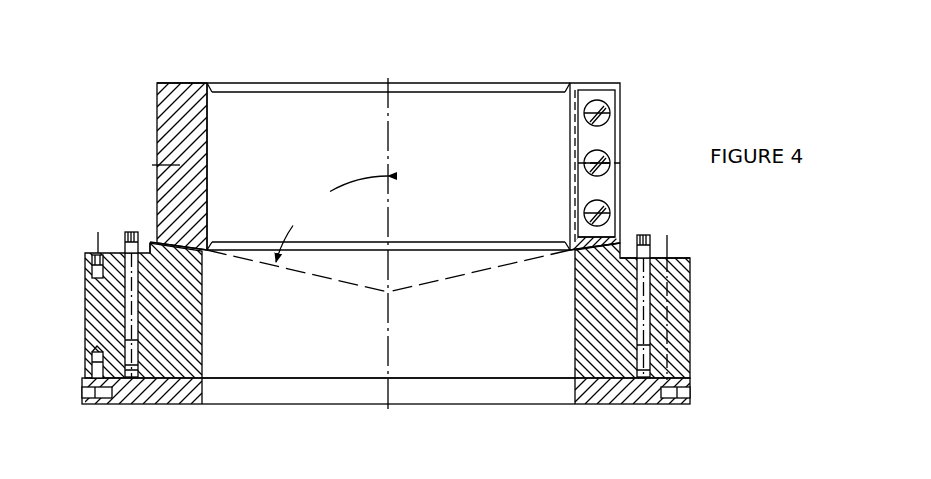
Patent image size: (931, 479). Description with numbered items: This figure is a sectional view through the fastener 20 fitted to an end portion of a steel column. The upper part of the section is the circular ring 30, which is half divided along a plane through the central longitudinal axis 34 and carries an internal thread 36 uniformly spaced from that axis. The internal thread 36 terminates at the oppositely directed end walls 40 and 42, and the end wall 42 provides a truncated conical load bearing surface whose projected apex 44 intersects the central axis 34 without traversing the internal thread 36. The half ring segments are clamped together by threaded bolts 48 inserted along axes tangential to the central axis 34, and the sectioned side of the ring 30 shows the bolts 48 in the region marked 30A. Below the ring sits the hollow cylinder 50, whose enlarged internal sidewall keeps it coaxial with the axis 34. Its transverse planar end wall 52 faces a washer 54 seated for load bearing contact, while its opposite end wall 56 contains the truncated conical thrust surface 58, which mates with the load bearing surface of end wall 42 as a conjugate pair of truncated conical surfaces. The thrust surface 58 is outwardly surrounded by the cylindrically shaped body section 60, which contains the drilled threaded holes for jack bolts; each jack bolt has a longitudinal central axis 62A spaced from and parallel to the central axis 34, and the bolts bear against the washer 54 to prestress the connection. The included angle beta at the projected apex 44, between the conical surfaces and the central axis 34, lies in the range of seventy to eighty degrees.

The fastener 20 is at (628, 80).
The circular ring 30 is at (156, 95).
The housing side plate with holes 30A is at (608, 210).
The central longitudinal axis 34 is at (390, 110).
The internal thread 36 is at (207, 115).
The end wall 40 is at (177, 83).
The end wall 42 is at (161, 250).
The projected apex 44 is at (389, 296).
The threaded bolts 48 is at (584, 160).
The hollow cylinder 50 is at (700, 330).
The transverse planar end wall 52 is at (204, 378).
The washer 54 is at (143, 404).
The end wall 56 is at (692, 258).
The truncated conical thrust surface 58 is at (600, 238).
The body section 60 is at (150, 243).
The longitudinal central axis 62A is at (128, 282).